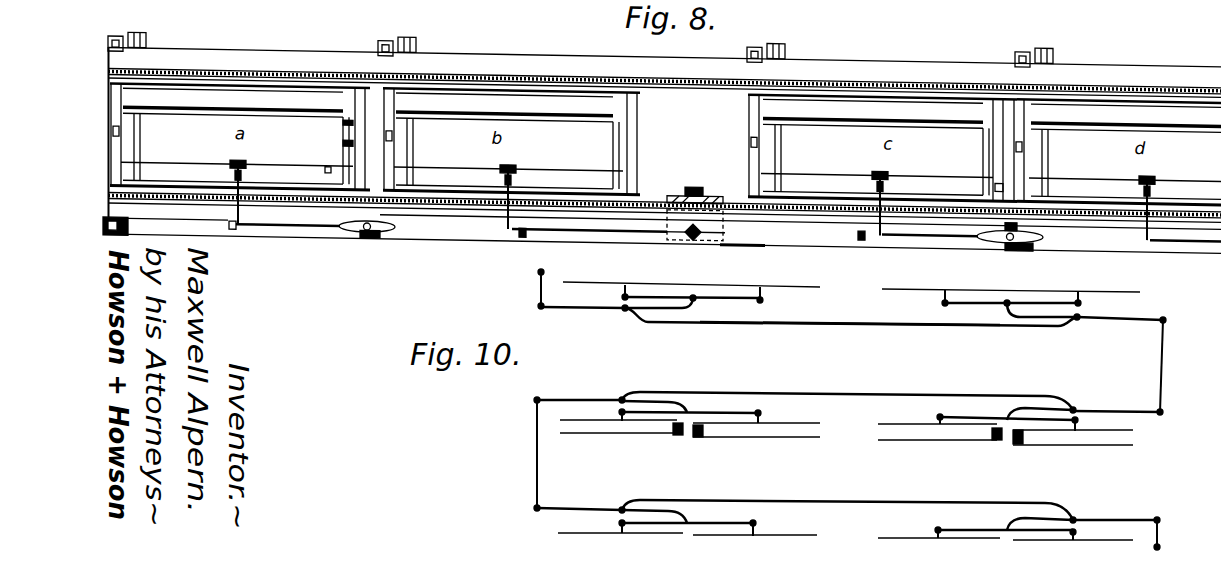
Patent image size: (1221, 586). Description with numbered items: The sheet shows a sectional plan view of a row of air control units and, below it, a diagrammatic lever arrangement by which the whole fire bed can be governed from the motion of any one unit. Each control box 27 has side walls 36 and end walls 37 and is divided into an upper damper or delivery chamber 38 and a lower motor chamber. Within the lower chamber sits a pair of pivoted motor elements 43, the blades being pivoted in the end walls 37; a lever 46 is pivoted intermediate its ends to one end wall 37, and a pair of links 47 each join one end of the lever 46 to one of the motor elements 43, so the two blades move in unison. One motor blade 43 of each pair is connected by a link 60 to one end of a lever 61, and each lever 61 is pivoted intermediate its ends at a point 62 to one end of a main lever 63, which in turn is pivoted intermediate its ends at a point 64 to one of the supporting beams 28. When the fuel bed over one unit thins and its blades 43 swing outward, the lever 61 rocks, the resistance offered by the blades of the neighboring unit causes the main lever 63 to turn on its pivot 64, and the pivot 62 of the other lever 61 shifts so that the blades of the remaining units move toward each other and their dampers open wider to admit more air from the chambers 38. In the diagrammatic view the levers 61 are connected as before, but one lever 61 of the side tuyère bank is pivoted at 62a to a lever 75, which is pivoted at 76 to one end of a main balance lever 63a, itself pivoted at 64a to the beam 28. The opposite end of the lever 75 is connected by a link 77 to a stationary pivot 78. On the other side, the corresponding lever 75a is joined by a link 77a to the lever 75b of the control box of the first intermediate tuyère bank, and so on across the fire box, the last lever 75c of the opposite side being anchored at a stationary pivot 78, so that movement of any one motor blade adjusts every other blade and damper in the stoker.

In FIG. 8, the control box 27 is at (245, 71).
In FIG. 8, the supporting beam 28 is at (473, 52).
In FIG. 8, the side wall 36 is at (277, 82).
In FIG. 8, the end wall 37 is at (122, 140).
In FIG. 8, the damper or delivery chamber 38 is at (998, 172).
In FIG. 8, the motor element 43 is at (180, 104).
In FIG. 10, the motor element 43 is at (708, 286).
In FIG. 8, the lever 46 is at (348, 136).
In FIG. 8, the link 47 is at (345, 116).
In FIG. 8, the link 60 is at (238, 203).
In FIG. 10, the link 60 is at (623, 292).
In FIG. 8, the lever 61 is at (282, 219).
In FIG. 10, the lever 61 is at (764, 303).
In FIG. 8, the pivot point 62 is at (365, 231).
In FIG. 10, the pivot 62a is at (695, 299).
In FIG. 8, the main lever 63 is at (610, 226).
In FIG. 10, the main balance lever 63a is at (846, 326).
In FIG. 8, the pivot point 64 is at (692, 227).
In FIG. 10, the pivot 64a is at (858, 328).
In FIG. 10, the lever 75 is at (583, 309).
In FIG. 10, the lever 75a is at (1103, 322).
In FIG. 10, the lever 75b is at (1104, 410).
In FIG. 10, the lever 75c is at (1090, 518).
In FIG. 10, the pivot 76 is at (622, 312).
In FIG. 10, the link 77 is at (539, 299).
In FIG. 10, the link 77a is at (1161, 362).
In FIG. 10, the stationary pivot 78 is at (538, 272).